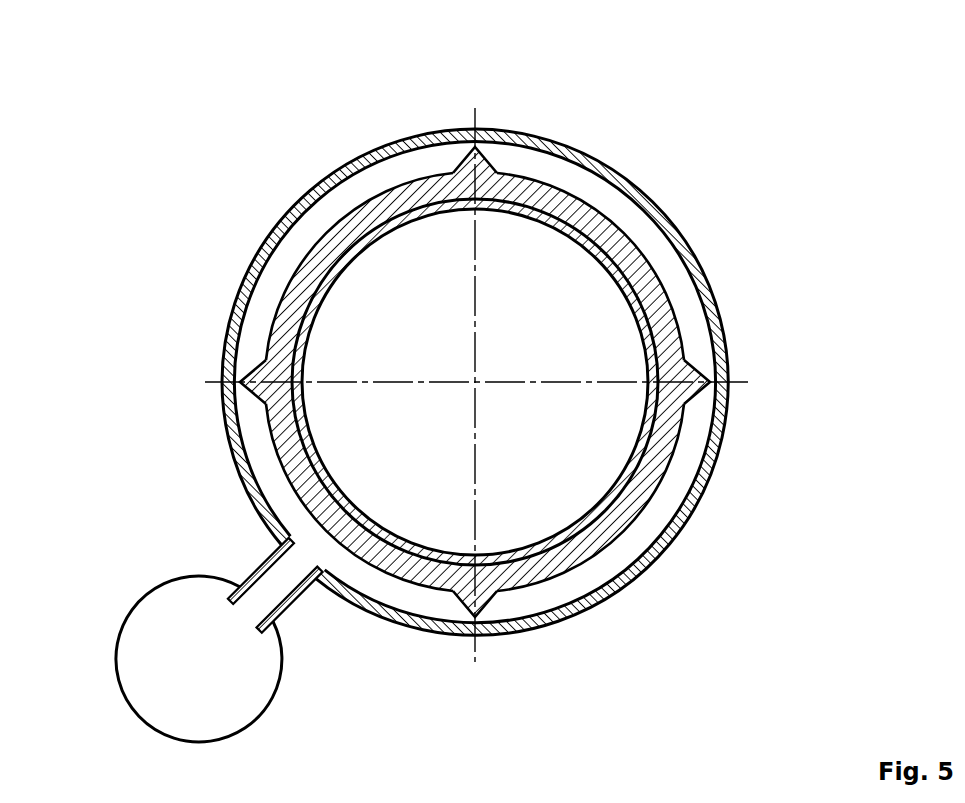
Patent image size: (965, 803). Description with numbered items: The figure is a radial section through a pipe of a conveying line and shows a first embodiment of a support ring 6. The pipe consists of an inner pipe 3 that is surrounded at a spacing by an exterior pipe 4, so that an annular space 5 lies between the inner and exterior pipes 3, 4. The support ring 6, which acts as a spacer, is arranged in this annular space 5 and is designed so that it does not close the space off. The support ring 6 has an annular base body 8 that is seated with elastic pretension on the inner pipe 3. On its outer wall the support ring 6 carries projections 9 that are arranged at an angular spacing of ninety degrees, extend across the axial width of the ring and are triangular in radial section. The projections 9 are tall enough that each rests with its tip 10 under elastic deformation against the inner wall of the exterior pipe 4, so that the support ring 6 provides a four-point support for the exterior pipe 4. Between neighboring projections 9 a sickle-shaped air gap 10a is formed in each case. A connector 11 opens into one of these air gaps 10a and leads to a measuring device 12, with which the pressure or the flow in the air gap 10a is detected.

The inner pipe 3 is at (660, 347).
The exterior pipe 4 is at (318, 180).
The annular space 5 is at (430, 165).
The support ring 6 is at (618, 216).
The annular base body 8 is at (668, 303).
The projections 9 is at (488, 166).
The tip 10 is at (478, 148).
The air gap 10a is at (657, 246).
The connector 11 is at (298, 608).
The measuring device 12 is at (136, 606).